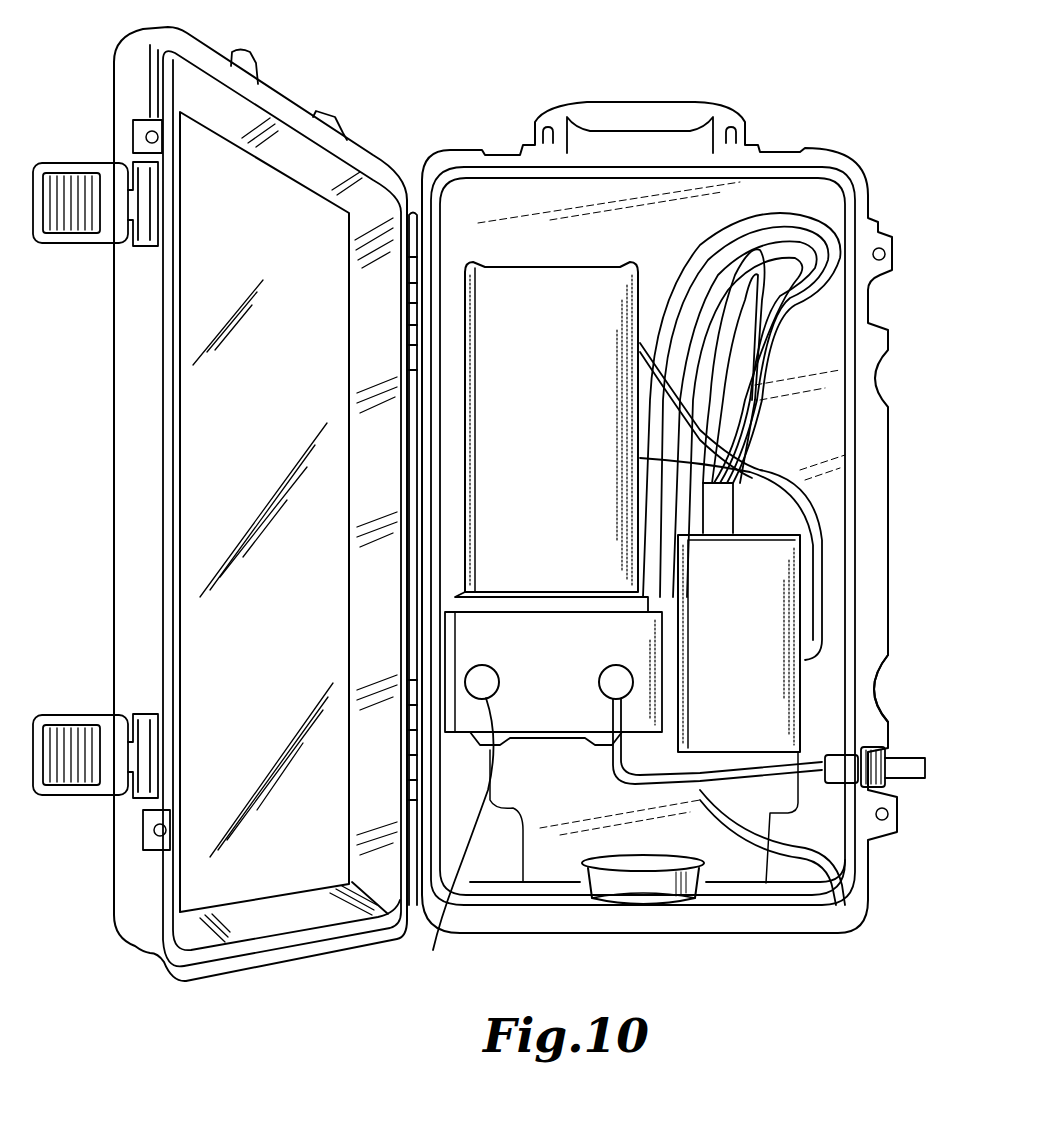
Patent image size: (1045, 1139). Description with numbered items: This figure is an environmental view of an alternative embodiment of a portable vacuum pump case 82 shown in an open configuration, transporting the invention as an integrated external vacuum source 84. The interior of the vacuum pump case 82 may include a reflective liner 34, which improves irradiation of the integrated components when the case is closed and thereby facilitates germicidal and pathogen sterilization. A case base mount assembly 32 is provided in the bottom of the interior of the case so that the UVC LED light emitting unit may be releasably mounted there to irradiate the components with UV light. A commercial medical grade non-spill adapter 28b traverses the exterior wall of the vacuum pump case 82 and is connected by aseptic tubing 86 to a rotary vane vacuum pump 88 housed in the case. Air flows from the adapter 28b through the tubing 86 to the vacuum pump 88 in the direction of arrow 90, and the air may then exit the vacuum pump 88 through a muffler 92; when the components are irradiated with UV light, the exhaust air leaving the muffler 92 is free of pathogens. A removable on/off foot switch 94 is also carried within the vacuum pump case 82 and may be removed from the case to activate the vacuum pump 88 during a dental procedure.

The reflective liner 34 is at (277, 217).
The external vacuum source 84 is at (862, 152).
The portable vacuum pump case 82 is at (860, 676).
The rotary vane vacuum pump 88 is at (553, 503).
The removable on/off foot switch 94 is at (739, 617).
The arrow 90 is at (843, 848).
The non-spill adapter 28b is at (905, 758).
The aseptic tubing 86 is at (860, 890).
The muffler 92 is at (433, 950).
The case base mount assembly 32 is at (665, 900).